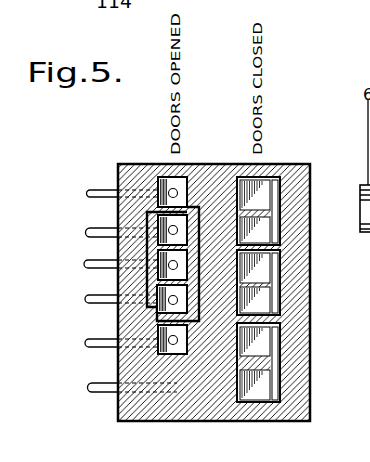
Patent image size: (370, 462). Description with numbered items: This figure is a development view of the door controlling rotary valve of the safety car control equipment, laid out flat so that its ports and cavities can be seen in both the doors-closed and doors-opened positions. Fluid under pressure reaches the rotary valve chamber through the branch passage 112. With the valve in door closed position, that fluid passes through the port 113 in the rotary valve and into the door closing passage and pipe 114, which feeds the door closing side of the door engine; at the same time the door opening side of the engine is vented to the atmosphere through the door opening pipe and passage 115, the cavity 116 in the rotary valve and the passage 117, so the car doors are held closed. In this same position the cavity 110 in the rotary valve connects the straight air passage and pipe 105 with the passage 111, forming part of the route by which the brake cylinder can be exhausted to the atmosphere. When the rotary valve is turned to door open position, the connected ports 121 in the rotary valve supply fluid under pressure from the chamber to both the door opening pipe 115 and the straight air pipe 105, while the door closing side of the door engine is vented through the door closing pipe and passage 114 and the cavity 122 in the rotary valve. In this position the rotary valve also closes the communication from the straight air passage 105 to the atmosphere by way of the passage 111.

The straight air passage and pipe 105 is at (90, 342).
The cavity in the door controlling rotary valve 110 is at (256, 343).
The passage 111 is at (105, 384).
The branch passage 112 is at (89, 191).
The port in the rotary valve 113 is at (253, 198).
The door closing passage and pipe 114 is at (90, 231).
The door opening pipe and passage 115 is at (90, 263).
The cavity in the rotary valve 116 is at (258, 266).
The passage 117 is at (90, 298).
The connected ports in the rotary valve 121 is at (177, 189).
The cavity in the rotary valve 122 is at (183, 222).